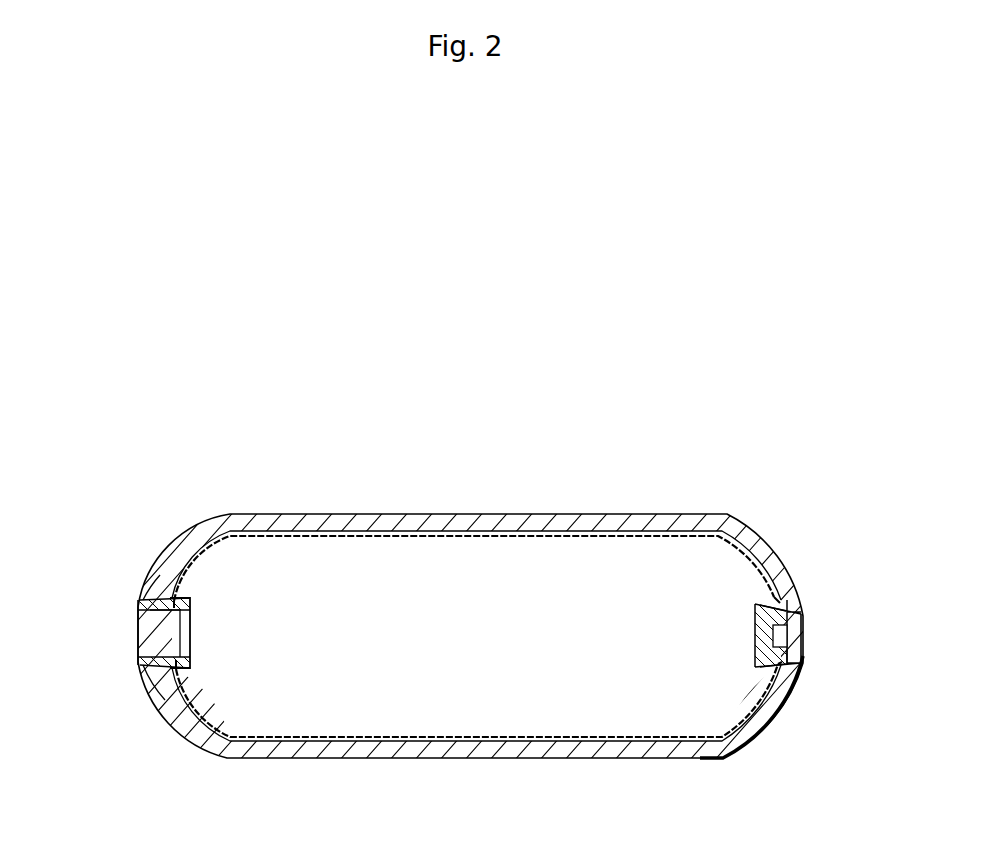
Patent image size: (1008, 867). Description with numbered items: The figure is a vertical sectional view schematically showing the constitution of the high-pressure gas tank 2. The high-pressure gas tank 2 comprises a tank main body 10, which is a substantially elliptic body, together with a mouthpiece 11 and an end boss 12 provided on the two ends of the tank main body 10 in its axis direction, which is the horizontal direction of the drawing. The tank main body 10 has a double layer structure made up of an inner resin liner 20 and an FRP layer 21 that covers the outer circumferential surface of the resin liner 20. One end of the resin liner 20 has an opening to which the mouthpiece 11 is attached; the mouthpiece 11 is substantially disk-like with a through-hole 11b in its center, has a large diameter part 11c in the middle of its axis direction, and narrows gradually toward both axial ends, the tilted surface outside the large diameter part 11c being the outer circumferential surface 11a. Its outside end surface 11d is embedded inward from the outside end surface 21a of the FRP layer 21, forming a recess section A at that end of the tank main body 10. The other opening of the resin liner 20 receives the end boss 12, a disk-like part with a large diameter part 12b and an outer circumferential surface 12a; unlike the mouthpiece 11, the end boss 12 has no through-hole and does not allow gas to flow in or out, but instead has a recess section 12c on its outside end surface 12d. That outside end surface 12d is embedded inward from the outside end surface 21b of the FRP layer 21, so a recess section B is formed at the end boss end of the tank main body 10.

The high-pressure gas tank 2 is at (291, 441).
The tank main body 10 is at (702, 514).
The mouthpiece 11 is at (170, 600).
The outer circumferential surface 11a is at (150, 613).
The through-hole 11b is at (163, 645).
The large diameter part 11c is at (170, 593).
The outside end surface 11d is at (155, 614).
The end boss 12 is at (773, 613).
The outer circumferential surface 12a is at (783, 613).
The large diameter part 12b is at (783, 602).
The recess section 12c is at (790, 668).
The outside end surface 12d is at (781, 640).
The resin liner 20 is at (362, 533).
The FRP layer 21 is at (443, 522).
The outside end surface 21a is at (137, 650).
The outside end surface 21b is at (800, 618).
The recess section A is at (147, 637).
The recess section B is at (790, 644).